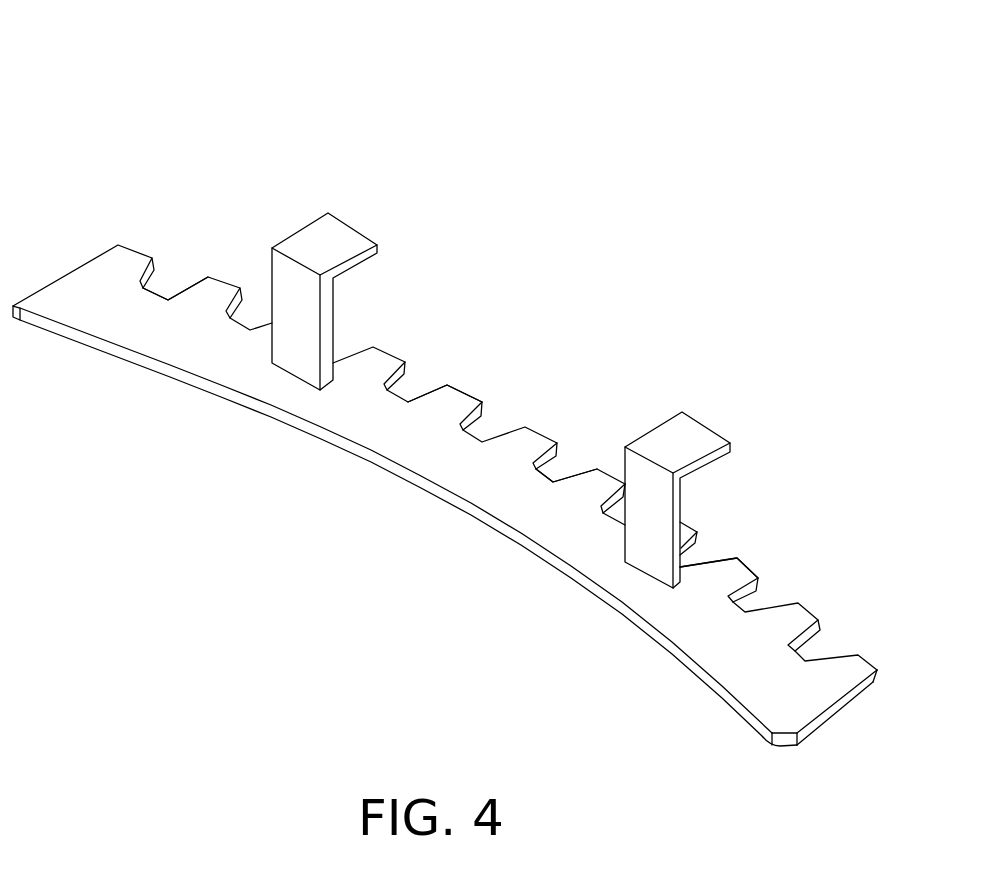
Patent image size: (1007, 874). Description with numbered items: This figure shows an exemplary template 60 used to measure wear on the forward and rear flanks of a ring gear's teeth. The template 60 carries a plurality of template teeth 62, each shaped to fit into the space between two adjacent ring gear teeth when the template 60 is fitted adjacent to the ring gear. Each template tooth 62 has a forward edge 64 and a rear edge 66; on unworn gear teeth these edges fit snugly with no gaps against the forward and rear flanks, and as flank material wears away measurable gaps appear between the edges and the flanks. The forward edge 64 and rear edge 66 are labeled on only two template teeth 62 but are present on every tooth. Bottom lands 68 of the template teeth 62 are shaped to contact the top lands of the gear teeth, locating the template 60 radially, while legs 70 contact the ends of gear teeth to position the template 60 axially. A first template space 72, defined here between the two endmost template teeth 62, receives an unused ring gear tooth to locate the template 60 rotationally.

The template 60 is at (445, 383).
The template tooth 62 is at (134, 281).
The forward edge 64 is at (483, 418).
The rear edge 66 is at (442, 387).
The bottom land 68 is at (553, 478).
The leg 70 is at (328, 240).
The first template space 72 is at (167, 283).